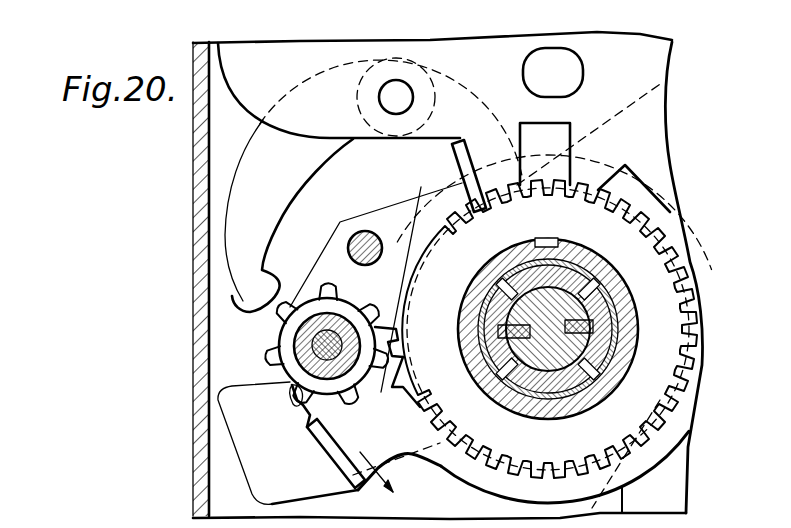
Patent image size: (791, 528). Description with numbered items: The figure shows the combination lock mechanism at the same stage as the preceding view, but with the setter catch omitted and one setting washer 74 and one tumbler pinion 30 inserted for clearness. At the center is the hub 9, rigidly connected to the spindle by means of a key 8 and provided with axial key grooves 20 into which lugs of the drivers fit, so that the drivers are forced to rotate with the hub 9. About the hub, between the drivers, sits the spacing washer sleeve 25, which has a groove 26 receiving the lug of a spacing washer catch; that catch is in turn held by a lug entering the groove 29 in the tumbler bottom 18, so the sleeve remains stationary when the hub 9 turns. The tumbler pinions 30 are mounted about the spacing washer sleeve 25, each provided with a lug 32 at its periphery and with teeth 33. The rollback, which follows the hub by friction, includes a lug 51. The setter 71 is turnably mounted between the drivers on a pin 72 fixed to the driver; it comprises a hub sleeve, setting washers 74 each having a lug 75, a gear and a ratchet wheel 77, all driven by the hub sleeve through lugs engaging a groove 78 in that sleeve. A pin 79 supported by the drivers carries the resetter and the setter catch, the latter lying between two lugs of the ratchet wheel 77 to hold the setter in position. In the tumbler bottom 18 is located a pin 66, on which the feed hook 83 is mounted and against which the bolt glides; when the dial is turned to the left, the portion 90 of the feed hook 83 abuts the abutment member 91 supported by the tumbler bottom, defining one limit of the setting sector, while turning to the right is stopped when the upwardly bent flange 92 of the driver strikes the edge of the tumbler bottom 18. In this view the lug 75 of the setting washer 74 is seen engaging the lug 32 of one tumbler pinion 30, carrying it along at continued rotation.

The tumbler bottom 18 is at (280, 80).
The pin 66 is at (395, 94).
The groove 29 is at (553, 134).
The abutment member 91 is at (450, 146).
The portion of the feed hook 90 is at (467, 190).
The pin 79 is at (352, 237).
The groove 26 is at (547, 238).
The axial key grooves 20 is at (584, 288).
The spacing washer sleeve 25 is at (612, 272).
The tumbler pinions 30 is at (684, 279).
The teeth 33 is at (698, 310).
The hub 9 is at (575, 334).
The key 8 is at (598, 350).
The lug 51 is at (624, 497).
The feed hook 83 is at (248, 291).
The pin 72 is at (320, 337).
The setting washers 74 is at (280, 346).
The setter 71 is at (307, 357).
The ratchet wheel 77 is at (290, 396).
The upwardly bent flange 92 is at (325, 437).
The lug 75 is at (394, 328).
The lug 32 is at (392, 306).
The groove 78 is at (340, 320).